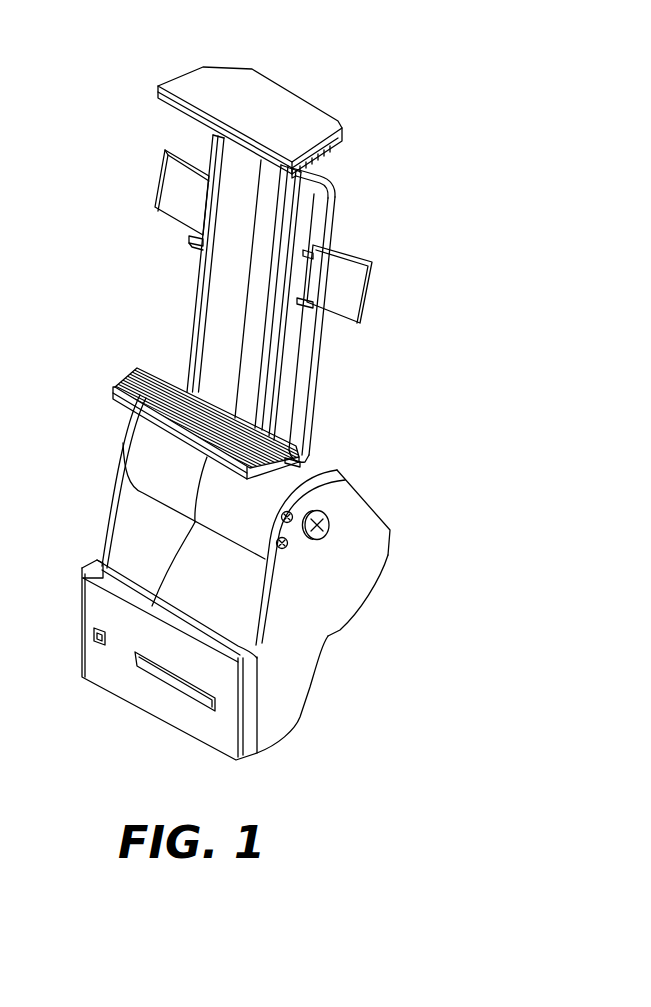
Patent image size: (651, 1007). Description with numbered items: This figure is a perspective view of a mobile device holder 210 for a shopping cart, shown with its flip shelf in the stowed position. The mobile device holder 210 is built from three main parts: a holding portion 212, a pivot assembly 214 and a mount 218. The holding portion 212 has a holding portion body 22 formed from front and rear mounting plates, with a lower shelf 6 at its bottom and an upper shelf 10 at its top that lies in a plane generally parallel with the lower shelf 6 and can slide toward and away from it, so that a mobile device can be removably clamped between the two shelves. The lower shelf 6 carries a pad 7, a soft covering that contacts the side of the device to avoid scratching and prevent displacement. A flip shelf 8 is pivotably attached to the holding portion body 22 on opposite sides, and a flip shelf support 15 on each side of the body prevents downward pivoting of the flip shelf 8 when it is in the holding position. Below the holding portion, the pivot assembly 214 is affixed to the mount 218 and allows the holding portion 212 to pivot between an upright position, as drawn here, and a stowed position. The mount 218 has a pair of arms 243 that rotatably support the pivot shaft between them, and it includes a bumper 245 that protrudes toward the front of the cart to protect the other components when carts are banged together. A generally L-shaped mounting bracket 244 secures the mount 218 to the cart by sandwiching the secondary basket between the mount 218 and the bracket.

The upper shelf 10 is at (284, 103).
The flip shelf 8 is at (168, 182).
The flip shelf support 15 is at (195, 242).
The pad 7 is at (140, 373).
The lower shelf 6 is at (112, 395).
The holding portion body 22 is at (291, 382).
The holding portion 212 is at (419, 241).
The mobile device holder 210 is at (409, 411).
The pivot assembly 214 is at (374, 479).
The bumper 245 is at (391, 531).
The arms 243 is at (373, 543).
The mount 218 is at (335, 661).
The mounting bracket 244 is at (112, 676).